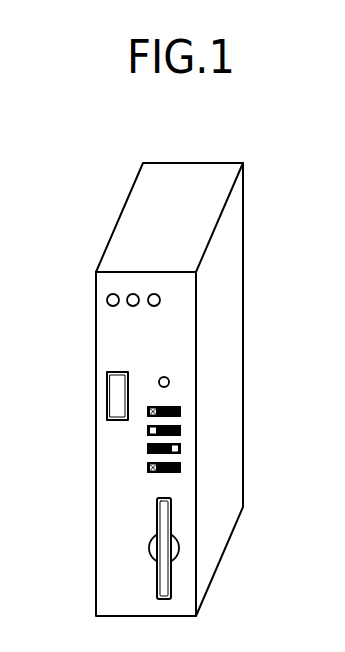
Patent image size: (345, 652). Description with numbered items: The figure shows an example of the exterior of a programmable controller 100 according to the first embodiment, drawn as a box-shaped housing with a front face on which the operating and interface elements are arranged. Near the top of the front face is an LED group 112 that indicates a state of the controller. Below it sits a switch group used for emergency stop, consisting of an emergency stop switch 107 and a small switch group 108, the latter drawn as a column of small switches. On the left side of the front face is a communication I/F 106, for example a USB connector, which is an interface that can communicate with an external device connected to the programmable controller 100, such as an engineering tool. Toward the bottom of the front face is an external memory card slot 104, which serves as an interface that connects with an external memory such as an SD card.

The programmable controller 100 is at (220, 563).
The external memory card slot 104 is at (172, 522).
The communication I/F 106 is at (107, 390).
The emergency stop switch 107 is at (169, 382).
The small switch group 108 is at (183, 404).
The LED group 112 is at (161, 292).